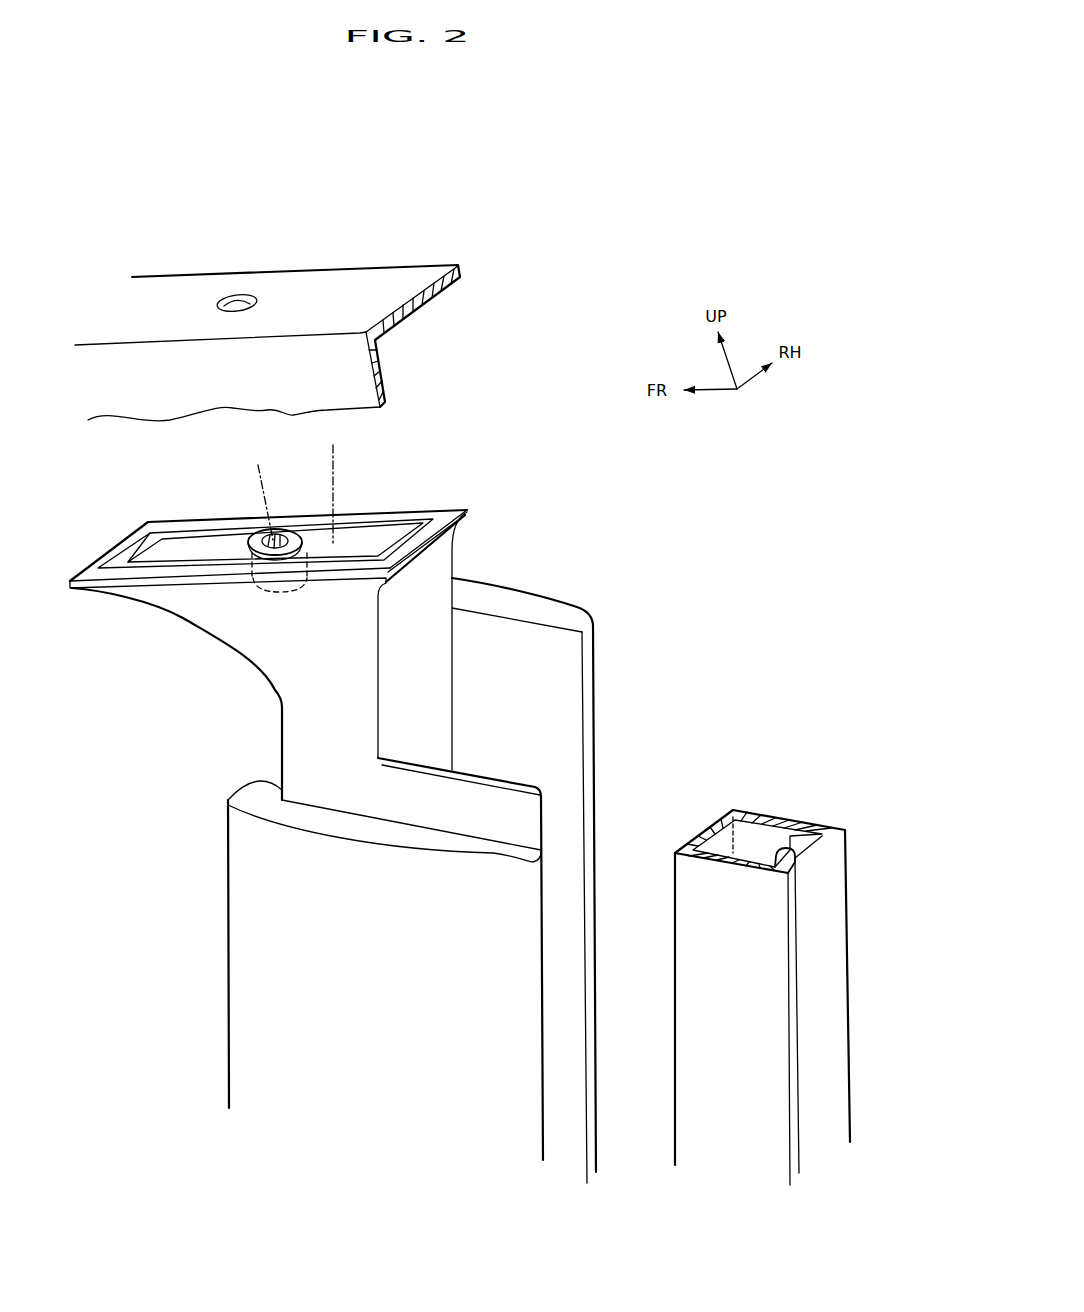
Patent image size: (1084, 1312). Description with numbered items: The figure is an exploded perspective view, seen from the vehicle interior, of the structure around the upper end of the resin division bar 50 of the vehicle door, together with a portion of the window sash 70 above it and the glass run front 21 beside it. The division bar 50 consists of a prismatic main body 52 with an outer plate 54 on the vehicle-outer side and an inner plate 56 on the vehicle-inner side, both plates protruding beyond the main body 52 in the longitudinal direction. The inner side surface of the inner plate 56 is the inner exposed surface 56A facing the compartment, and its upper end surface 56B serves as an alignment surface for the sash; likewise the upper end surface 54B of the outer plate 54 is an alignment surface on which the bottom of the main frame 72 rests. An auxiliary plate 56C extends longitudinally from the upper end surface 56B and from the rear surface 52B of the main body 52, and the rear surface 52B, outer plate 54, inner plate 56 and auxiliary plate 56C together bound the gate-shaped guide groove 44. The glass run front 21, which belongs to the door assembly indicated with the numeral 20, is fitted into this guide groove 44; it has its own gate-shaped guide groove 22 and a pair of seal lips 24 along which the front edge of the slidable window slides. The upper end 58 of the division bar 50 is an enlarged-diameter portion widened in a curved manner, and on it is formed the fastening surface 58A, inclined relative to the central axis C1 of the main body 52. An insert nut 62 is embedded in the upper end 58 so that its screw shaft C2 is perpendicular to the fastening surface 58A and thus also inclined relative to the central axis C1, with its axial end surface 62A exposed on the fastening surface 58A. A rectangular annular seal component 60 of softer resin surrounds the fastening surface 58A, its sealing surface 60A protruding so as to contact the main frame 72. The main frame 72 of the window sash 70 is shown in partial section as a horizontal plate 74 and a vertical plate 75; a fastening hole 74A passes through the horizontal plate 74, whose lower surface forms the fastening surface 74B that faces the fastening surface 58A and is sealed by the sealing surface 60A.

The vehicle pillar 20 is at (795, 954).
The glass run front 21 is at (795, 954).
The guide groove 22 is at (745, 838).
The seal lip 24 is at (752, 863).
The guide groove 44 is at (563, 830).
The division bar 50 is at (367, 802).
The main body 52 is at (524, 641).
The rear surface 52B is at (423, 675).
The outer plate 54 is at (566, 867).
The upper end surface 54B is at (517, 600).
The inner plate 56 is at (319, 946).
The inner exposed surface 56A is at (278, 912).
The upper end surface 56B is at (250, 793).
The auxiliary plate 56C is at (482, 777).
The upper end 58 is at (222, 618).
The fastening surface 58A is at (362, 540).
The seal component 60 is at (306, 506).
The sealing surface 60A is at (445, 517).
The insert nut 62 is at (233, 517).
The axial end surface 62A is at (258, 540).
The window sash 70 is at (317, 306).
The main frame 72 is at (317, 317).
The horizontal plate 74 is at (155, 290).
The fastening hole 74A is at (242, 300).
The fastening surface 74B is at (423, 303).
The vertical plate 75 is at (352, 375).
The central axis C1 is at (329, 482).
The screw shaft C2 is at (257, 491).